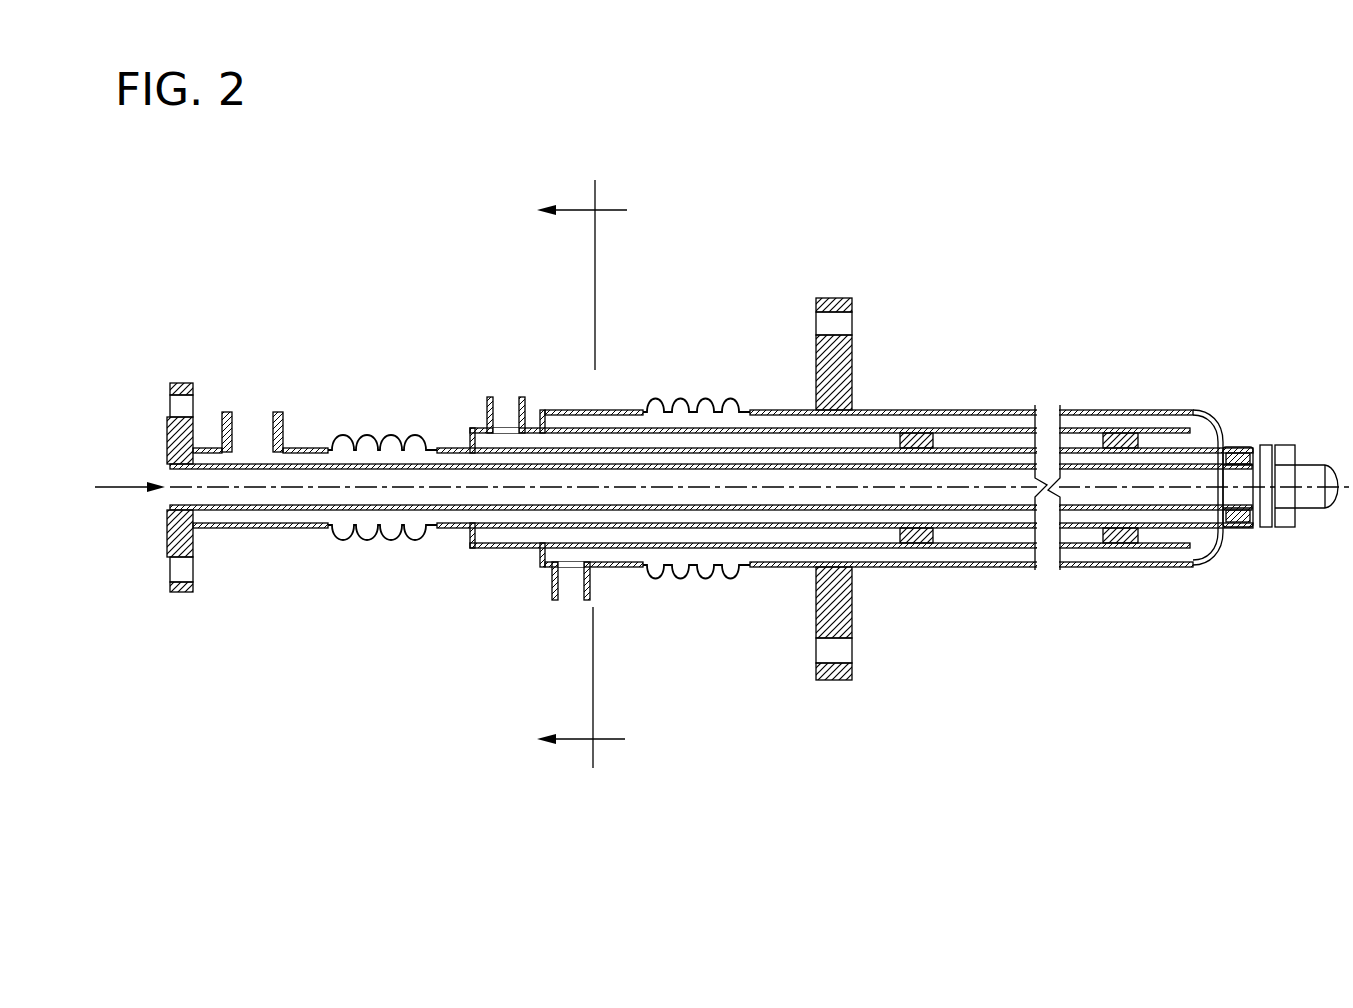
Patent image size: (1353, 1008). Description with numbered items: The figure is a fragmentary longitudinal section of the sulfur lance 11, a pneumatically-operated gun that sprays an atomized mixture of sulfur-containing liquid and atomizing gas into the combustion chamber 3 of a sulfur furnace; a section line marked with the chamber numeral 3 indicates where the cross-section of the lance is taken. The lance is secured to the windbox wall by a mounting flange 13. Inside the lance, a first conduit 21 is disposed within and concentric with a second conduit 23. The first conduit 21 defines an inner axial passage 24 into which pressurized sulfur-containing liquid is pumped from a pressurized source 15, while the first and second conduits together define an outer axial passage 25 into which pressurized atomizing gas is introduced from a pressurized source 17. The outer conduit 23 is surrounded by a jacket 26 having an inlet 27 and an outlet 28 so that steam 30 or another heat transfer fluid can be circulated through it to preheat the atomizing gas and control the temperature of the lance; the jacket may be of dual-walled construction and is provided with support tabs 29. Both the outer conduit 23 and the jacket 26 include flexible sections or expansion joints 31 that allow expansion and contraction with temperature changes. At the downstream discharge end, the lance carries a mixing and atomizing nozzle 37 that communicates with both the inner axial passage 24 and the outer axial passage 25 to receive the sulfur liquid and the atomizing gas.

The sulfur combustion chamber 3 is at (582, 474).
The sulfur lance 11 is at (262, 686).
The mounting flange 13 is at (852, 362).
The pressurized source 15 is at (110, 483).
The pressurized source 17 is at (254, 385).
The first conduit 21 is at (303, 512).
The second conduit 23 is at (220, 530).
The inner axial passage 24 is at (354, 492).
The outer axial passage 25 is at (462, 458).
The jacket 26 is at (474, 550).
The inlet 27 is at (528, 402).
The outlet 28 is at (592, 582).
The support tabs 29 is at (1110, 432).
The steam 30 is at (507, 362).
The expansion joints 31 is at (355, 437).
The mixing and atomizing nozzle 37 is at (1322, 445).